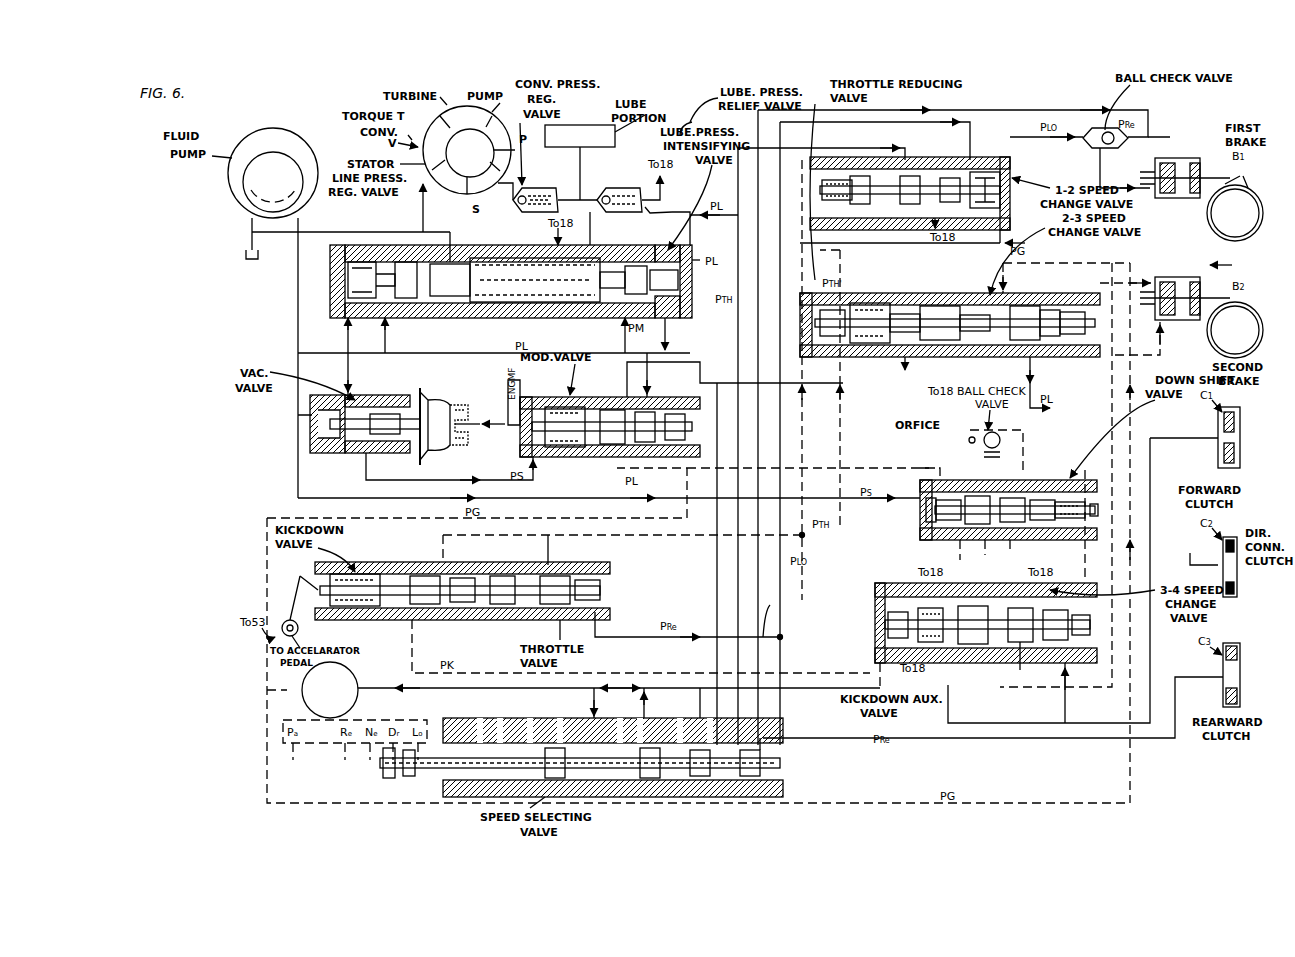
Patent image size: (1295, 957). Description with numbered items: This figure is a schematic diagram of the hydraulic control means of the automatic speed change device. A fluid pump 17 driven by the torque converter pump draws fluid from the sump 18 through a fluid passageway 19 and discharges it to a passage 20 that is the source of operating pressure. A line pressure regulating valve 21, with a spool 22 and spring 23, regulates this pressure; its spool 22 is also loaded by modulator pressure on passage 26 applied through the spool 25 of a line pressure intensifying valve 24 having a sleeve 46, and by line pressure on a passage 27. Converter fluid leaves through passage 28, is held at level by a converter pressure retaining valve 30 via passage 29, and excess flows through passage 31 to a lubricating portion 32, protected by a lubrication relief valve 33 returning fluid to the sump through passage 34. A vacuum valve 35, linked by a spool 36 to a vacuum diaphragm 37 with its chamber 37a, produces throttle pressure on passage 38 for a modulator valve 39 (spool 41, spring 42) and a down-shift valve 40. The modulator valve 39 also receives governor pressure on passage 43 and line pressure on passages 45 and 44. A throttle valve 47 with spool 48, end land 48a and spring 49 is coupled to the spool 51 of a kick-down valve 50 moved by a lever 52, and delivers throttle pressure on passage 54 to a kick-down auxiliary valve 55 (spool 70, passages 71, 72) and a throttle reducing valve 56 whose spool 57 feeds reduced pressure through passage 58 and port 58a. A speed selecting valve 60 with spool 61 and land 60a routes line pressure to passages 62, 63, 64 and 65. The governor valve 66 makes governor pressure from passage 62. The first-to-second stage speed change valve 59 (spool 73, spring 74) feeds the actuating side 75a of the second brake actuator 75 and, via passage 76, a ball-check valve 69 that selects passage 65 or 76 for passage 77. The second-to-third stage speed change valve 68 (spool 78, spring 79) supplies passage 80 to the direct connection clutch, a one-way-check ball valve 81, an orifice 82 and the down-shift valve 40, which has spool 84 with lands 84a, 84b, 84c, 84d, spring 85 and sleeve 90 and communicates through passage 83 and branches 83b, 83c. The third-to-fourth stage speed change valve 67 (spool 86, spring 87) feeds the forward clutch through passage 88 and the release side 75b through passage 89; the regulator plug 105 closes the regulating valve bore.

The fluid pump 17 is at (316, 158).
The sump 18 is at (266, 258).
The fluid passageway 19 is at (250, 230).
The passage 20 is at (312, 222).
The line pressure regulating valve 21 is at (392, 258).
The spool 22 is at (480, 318).
The spring 23 is at (510, 258).
The line pressure intensifying valve 24 is at (628, 258).
The spool 25 is at (622, 326).
The passage 26 is at (640, 362).
The passage 27 is at (692, 228).
The passage 28 is at (426, 200).
The passage 29 is at (502, 187).
The converter pressure retaining valve 30 is at (538, 186).
The passage 31 is at (599, 228).
The lubricating portion 32 is at (592, 125).
The lubrication relief valve 33 is at (615, 186).
The passage 34 is at (655, 232).
The vacuum valve 35 is at (395, 395).
The spool 36 is at (388, 436).
The vacuum diaphragm 37 is at (440, 400).
The vacuum chamber 37a is at (470, 400).
The passage 38 is at (364, 478).
The modulator valve 39 is at (591, 395).
The down-shift valve 40 is at (1065, 478).
The spool 41 is at (672, 444).
The spring 42 is at (548, 406).
The passage 43 is at (1003, 232).
The passage 44 is at (912, 236).
The passage 45 is at (610, 458).
The sleeve 46 is at (676, 320).
The throttle valve 47 is at (505, 606).
The spool 48 is at (548, 608).
The throttle valve end land 48a is at (596, 608).
The spring 49 is at (500, 575).
The kick-down valve 50 is at (358, 562).
The spool 51 is at (356, 608).
The lever 52 is at (297, 587).
The passage 54 is at (804, 370).
The kick-down auxiliary valve 55 is at (912, 605).
The throttle reducing valve 56 is at (822, 300).
The spool 57 is at (880, 300).
The passage 58 is at (856, 300).
The port 58a is at (905, 312).
The 1-2 stage speed change valve 59 is at (1012, 170).
The speed selecting valve 60 is at (548, 718).
The speed selecting valve land 60a is at (762, 760).
The spool 61 is at (399, 763).
The passage 62 is at (906, 150).
The passage 63 is at (758, 418).
The passage 64 is at (985, 158).
The passage 65 is at (493, 700).
The governor valve 66 is at (355, 675).
The 3-4 stage speed change valve 67 is at (1000, 595).
The 2-3 stage speed change valve 68 is at (1000, 295).
The ball-check valve 69 is at (1118, 150).
The spool 70 is at (855, 603).
The passage 71 is at (414, 635).
The passage 72 is at (846, 370).
The spool 73 is at (988, 212).
The spring 74 is at (855, 210).
The actuator valve 75 is at (1141, 338).
The actuating side 75a is at (1150, 280).
The release side 75b is at (1226, 256).
The passage 76 is at (950, 160).
The passage 77 is at (1098, 180).
The spool 78 is at (960, 300).
The spring 79 is at (925, 300).
The passage 80 is at (1034, 372).
The one-way-check ball valve 81 is at (1003, 434).
The orifice 82 is at (962, 428).
The passage 83 is at (970, 494).
The passage 83b is at (974, 555).
The passage 83c is at (1018, 549).
The spool 84 is at (1060, 522).
The extreme left end land 84a is at (930, 514).
The land 84b is at (975, 445).
The land 84c is at (1013, 496).
The land 84d is at (1042, 498).
The spring 85 is at (1070, 498).
The spool 86 is at (1015, 672).
The spring 87 is at (920, 582).
The passage 88 is at (1150, 450).
The passage 89 is at (1020, 690).
The sleeve 90 is at (925, 530).
The regulator valve plug 105 is at (340, 286).